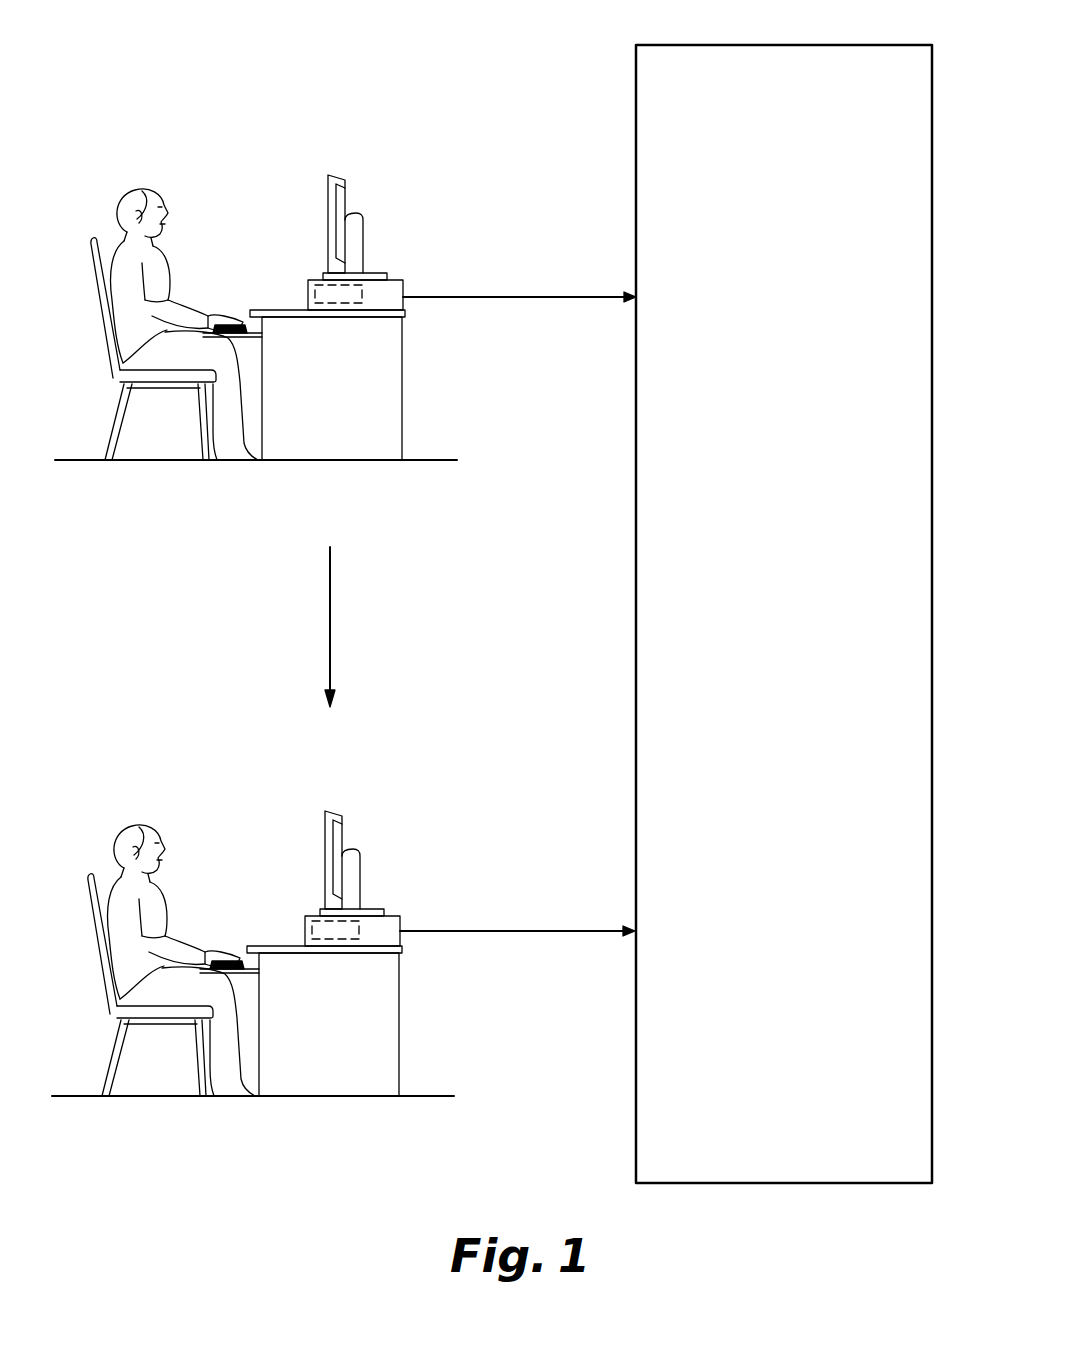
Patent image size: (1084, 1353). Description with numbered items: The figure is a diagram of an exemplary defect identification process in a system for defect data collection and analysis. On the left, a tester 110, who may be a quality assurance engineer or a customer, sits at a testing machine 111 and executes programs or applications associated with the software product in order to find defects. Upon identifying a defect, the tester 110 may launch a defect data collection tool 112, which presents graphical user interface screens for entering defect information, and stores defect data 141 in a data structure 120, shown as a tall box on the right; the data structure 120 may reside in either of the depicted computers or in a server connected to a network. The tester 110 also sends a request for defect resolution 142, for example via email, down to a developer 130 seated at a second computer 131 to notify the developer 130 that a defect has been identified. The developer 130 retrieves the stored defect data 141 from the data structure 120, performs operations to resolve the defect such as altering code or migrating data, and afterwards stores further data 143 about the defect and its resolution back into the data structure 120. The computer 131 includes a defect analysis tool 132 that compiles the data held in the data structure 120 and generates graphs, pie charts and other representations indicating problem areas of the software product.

The tester 110 is at (133, 184).
The testing machine 111 is at (329, 180).
The defect data collection tool 112 is at (310, 282).
The data structure 120 is at (828, 45).
The developer 130 is at (182, 931).
The computer 131 is at (352, 838).
The defect analysis tool 132 is at (318, 918).
The defect data 141 is at (510, 298).
The request for defect resolution 142 is at (330, 611).
The further defect data 143 is at (517, 945).